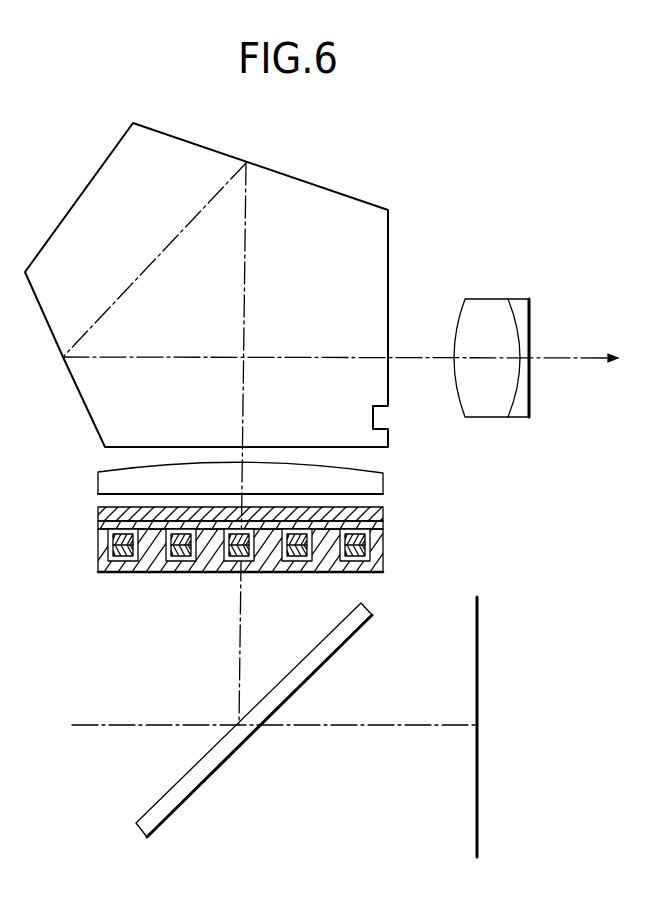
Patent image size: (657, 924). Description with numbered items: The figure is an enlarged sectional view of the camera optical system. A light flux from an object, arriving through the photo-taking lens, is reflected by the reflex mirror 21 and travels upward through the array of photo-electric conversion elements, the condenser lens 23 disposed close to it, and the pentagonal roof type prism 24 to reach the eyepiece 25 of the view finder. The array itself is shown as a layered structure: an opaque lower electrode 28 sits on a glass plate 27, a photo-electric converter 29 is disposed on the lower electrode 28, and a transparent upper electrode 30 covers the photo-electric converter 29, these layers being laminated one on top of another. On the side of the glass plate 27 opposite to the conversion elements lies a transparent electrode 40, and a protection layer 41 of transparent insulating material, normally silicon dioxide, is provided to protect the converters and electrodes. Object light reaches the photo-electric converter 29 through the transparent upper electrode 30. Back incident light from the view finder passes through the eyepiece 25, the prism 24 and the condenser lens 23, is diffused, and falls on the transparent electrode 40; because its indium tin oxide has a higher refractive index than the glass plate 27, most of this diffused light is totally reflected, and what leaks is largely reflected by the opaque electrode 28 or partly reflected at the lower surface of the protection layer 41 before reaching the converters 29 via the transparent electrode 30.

The reflex mirror 21 is at (200, 778).
The condenser lens 23 is at (98, 478).
The pentagonal roof type prism 24 is at (195, 152).
The eyepiece 25 is at (480, 305).
The glass plate 27 is at (100, 527).
The opaque lower electrode 28 is at (363, 537).
The photo-electric converter 29 is at (268, 543).
The transparent upper electrode 30 is at (365, 560).
The transparent electrode 40 is at (98, 510).
The protection layer 41 is at (100, 548).